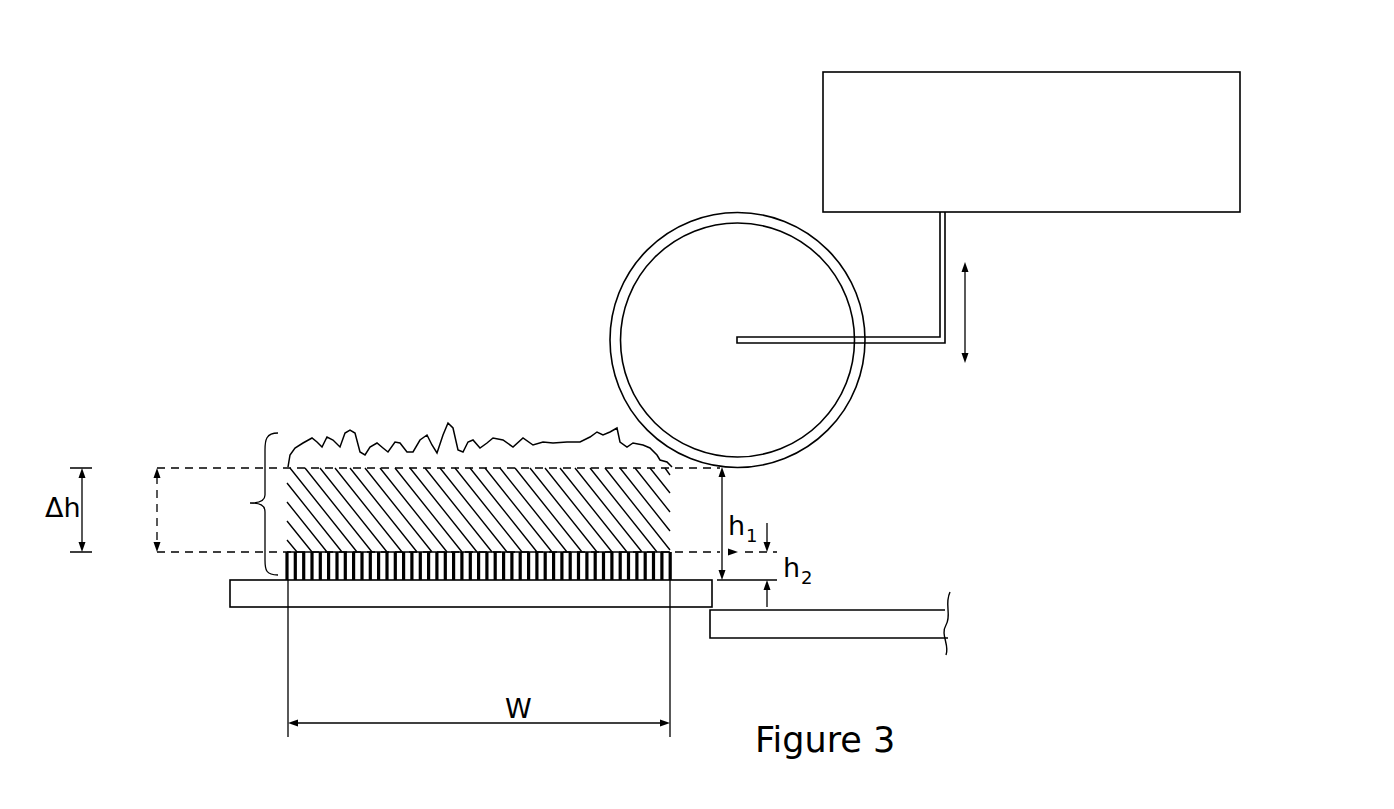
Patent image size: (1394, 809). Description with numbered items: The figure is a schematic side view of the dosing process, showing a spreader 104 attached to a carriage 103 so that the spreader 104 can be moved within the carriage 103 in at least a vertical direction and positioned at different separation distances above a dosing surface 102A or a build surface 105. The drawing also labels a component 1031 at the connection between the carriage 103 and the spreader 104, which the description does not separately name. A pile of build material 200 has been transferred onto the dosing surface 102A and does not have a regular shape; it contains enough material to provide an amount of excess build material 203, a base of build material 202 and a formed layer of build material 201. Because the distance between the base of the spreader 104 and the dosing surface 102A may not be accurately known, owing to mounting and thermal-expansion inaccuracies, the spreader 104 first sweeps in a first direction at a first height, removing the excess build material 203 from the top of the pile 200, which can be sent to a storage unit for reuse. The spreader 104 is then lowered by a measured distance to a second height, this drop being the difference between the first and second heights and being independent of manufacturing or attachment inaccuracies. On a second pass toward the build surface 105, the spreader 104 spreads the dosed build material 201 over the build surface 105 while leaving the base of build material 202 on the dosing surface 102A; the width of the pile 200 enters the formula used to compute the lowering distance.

The carriage 103 is at (1192, 103).
The movable shaft of drive unit 1031 is at (945, 292).
The spreader 104 is at (808, 400).
The build surface 105 is at (897, 625).
The dosing surface 102A is at (253, 593).
The pile of build material 200 is at (235, 504).
The formed layer of build material 201 is at (642, 498).
The base of build material 202 is at (633, 568).
The excess build material 203 is at (453, 449).